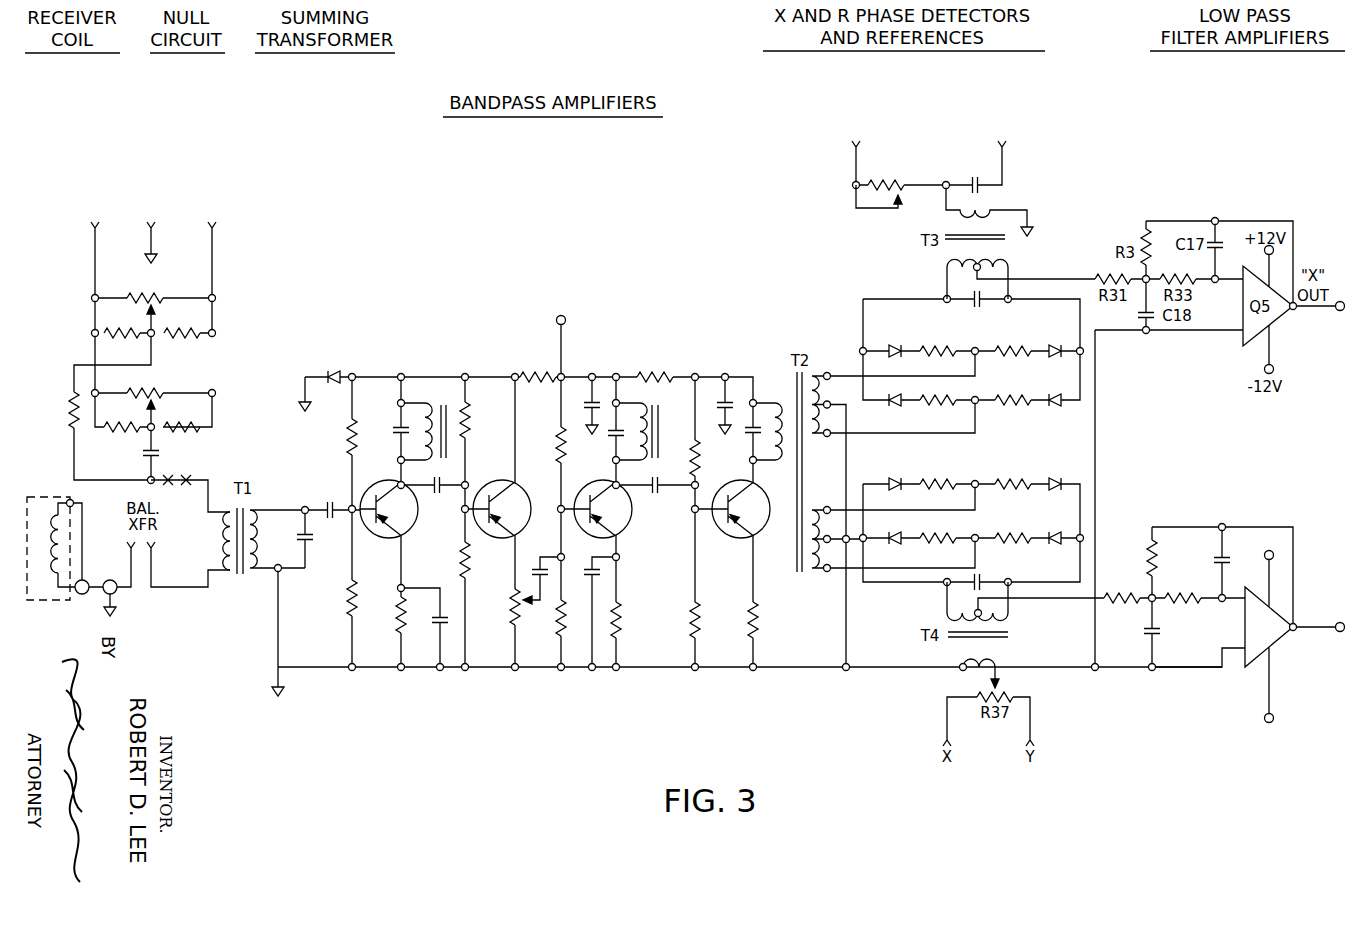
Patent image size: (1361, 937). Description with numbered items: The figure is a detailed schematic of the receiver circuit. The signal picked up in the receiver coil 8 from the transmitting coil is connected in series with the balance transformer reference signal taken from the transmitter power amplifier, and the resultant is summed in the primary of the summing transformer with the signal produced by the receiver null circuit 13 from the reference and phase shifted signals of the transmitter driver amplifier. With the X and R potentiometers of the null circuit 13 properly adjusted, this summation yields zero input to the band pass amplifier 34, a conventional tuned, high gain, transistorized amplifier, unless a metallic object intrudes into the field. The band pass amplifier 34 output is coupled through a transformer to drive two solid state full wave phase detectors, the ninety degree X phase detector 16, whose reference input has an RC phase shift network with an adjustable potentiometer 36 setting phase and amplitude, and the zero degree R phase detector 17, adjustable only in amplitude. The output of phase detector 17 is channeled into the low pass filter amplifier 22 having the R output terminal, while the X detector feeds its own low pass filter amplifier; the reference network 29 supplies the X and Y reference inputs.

The receiver coil 8 is at (47, 513).
The null circuit 13 is at (188, 180).
The band pass amplifier 34 is at (420, 358).
The 90 degree reference phase shifter 29 is at (926, 165).
The potentiometer 36 is at (868, 198).
The 90° phase detector 16 is at (1102, 392).
The phase detector 17 is at (1103, 510).
The low pass filter amplifier 22 is at (1183, 673).